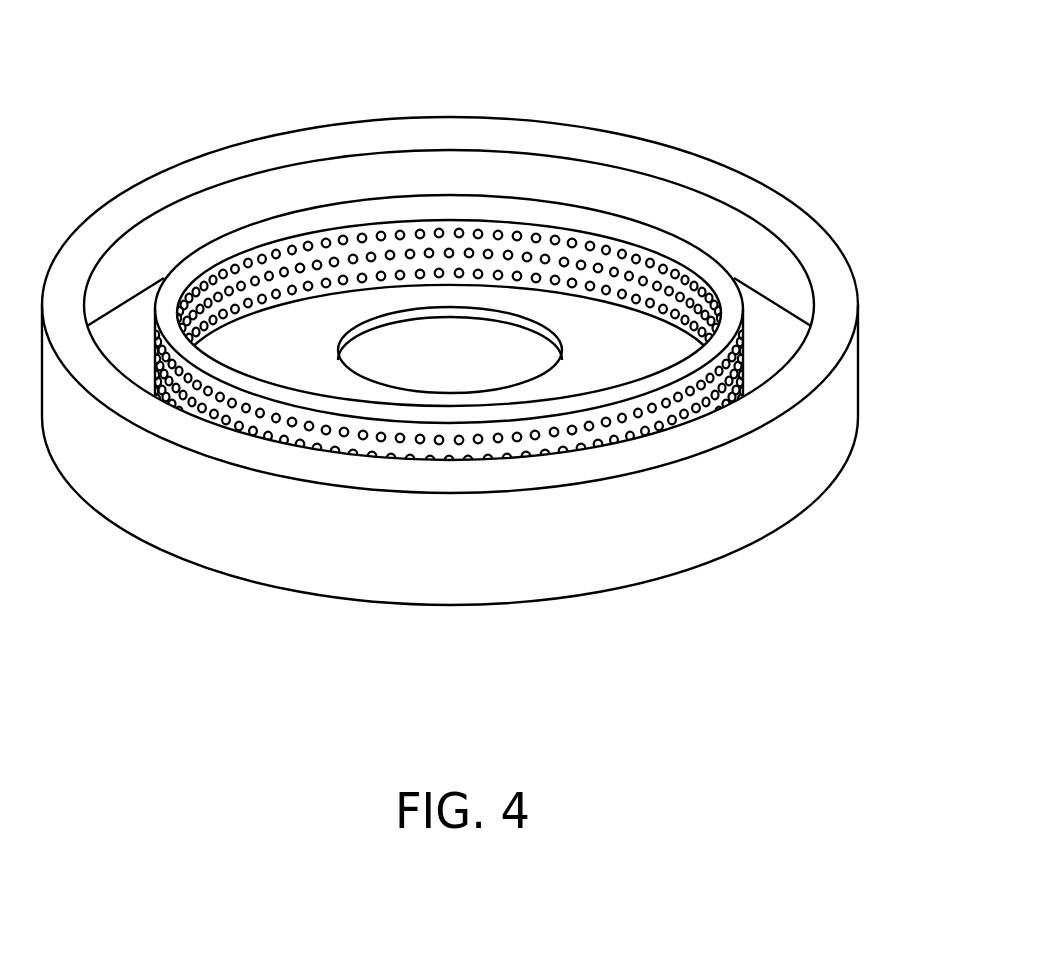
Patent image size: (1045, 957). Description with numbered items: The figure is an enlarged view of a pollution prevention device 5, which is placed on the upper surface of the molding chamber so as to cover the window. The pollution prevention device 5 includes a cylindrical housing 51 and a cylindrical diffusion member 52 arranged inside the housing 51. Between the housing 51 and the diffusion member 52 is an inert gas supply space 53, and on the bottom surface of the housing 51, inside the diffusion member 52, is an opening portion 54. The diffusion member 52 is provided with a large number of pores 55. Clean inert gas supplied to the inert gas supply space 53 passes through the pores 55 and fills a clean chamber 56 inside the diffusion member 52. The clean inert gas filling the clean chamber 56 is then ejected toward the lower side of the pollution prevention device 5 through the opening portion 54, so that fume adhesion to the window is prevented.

The pollution prevention device 5 is at (829, 200).
The cylindrical housing 51 is at (823, 289).
The cylindrical diffusion member 52 is at (478, 212).
The inert gas supply space 53 is at (773, 318).
The opening portion 54 is at (462, 369).
The pores 55 is at (383, 229).
The clean chamber 56 is at (300, 367).